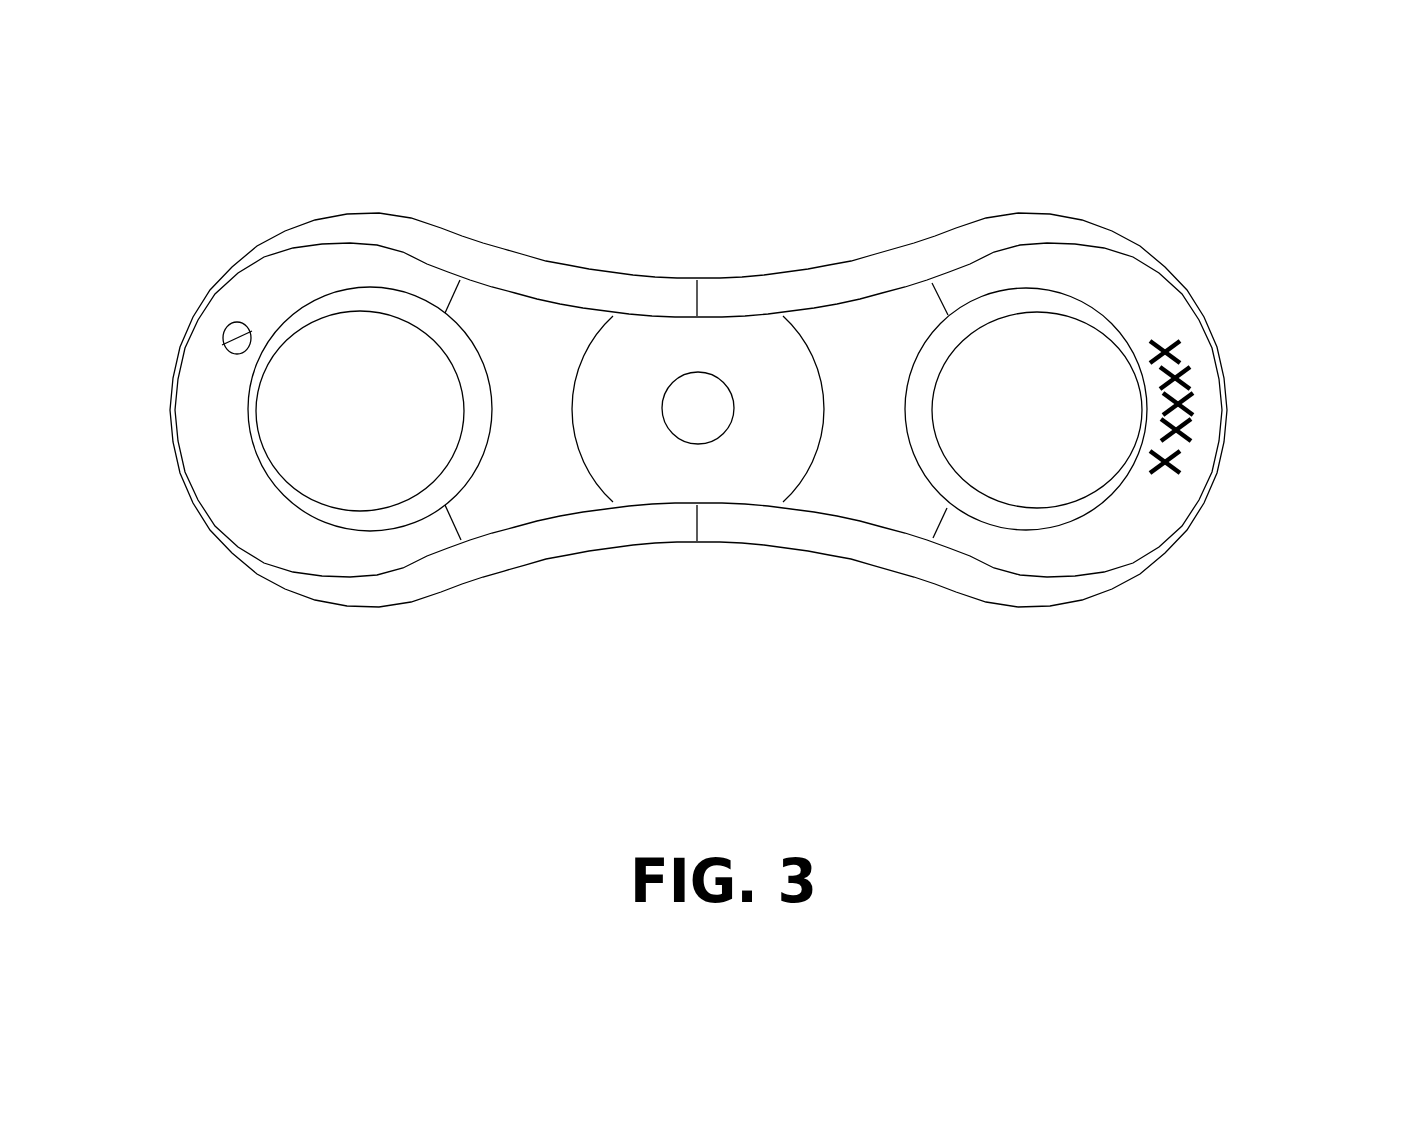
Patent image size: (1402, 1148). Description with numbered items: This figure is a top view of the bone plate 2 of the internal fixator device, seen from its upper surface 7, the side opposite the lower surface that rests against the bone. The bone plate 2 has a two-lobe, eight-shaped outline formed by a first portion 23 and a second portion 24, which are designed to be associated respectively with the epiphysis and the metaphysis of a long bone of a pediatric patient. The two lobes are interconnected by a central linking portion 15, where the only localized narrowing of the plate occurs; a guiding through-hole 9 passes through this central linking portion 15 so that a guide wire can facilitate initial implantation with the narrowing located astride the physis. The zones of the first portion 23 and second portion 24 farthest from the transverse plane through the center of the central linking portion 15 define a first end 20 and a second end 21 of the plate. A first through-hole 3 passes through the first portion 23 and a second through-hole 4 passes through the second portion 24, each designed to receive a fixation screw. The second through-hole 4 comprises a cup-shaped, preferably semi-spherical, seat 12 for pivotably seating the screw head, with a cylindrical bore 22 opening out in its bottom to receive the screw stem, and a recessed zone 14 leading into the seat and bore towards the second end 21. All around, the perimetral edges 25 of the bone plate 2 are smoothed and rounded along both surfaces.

The bone plate 2 is at (701, 441).
The first through-hole 3 is at (340, 390).
The second through-hole 4 is at (1028, 407).
The upper surface 7 is at (510, 351).
The guiding through-hole 9 is at (700, 417).
The cup-shaped seat 12 is at (984, 303).
The recessed zone 14 is at (248, 417).
The central linking portion 15 is at (762, 453).
The first end 20 is at (157, 403).
The second end 21 is at (1244, 398).
The cylindrical bore 22 is at (995, 493).
The first portion 23 is at (340, 543).
The second portion 24 is at (1028, 548).
The perimetral edges 25 is at (267, 248).